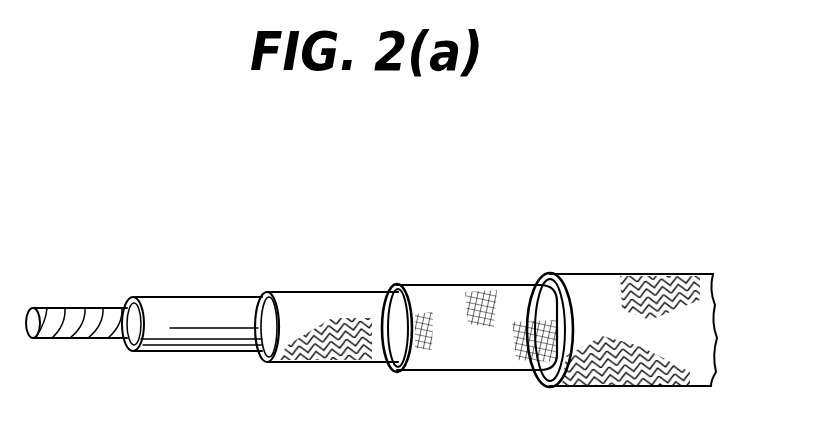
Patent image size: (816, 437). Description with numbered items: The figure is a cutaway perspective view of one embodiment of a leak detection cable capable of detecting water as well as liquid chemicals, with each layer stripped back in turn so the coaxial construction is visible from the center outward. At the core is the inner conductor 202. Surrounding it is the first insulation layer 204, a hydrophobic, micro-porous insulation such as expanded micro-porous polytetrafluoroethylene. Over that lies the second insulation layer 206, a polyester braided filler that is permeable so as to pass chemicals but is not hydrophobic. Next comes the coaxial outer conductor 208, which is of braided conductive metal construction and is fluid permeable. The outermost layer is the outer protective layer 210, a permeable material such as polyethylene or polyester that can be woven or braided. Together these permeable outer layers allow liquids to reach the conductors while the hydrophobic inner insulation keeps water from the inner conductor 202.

The inner conductor 202 is at (75, 308).
The first insulation layer 204 is at (195, 297).
The second insulation layer 206 is at (323, 292).
The coaxial outer conductor 208 is at (462, 285).
The outer protective layer 210 is at (627, 276).